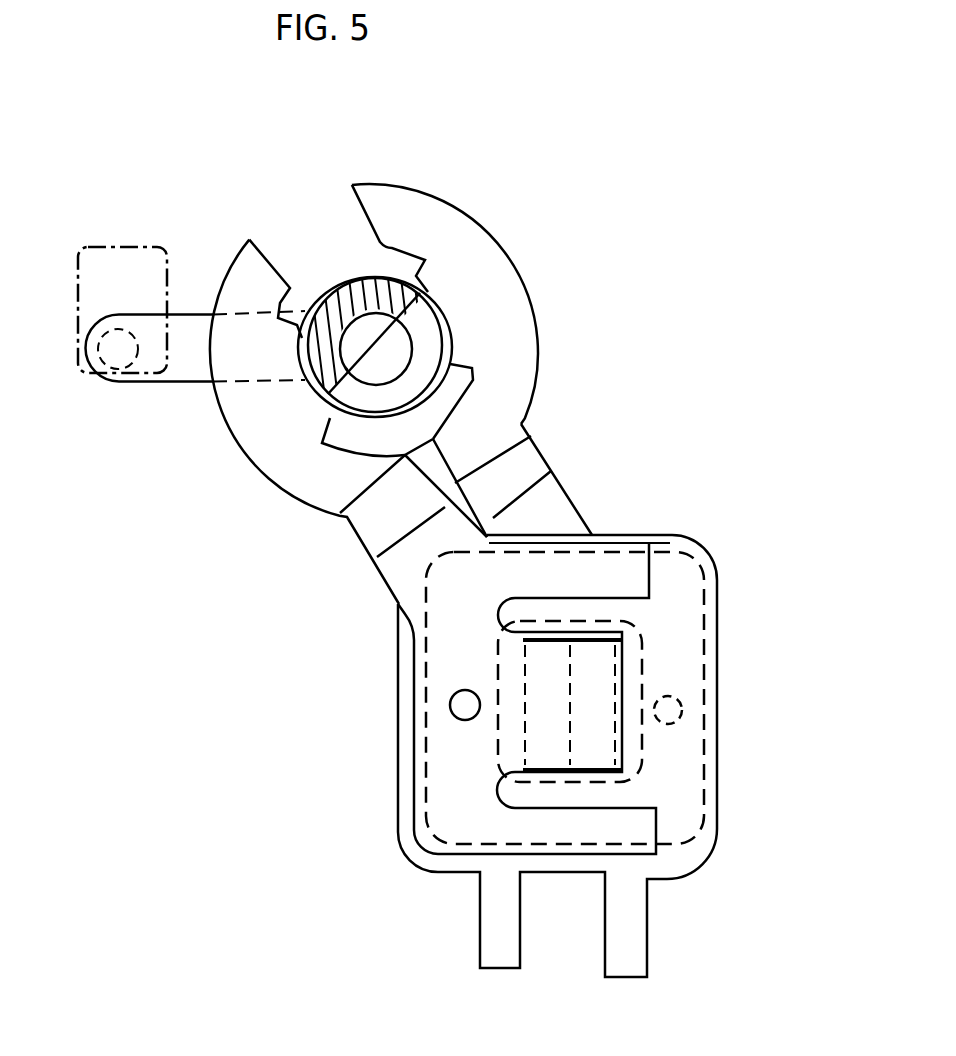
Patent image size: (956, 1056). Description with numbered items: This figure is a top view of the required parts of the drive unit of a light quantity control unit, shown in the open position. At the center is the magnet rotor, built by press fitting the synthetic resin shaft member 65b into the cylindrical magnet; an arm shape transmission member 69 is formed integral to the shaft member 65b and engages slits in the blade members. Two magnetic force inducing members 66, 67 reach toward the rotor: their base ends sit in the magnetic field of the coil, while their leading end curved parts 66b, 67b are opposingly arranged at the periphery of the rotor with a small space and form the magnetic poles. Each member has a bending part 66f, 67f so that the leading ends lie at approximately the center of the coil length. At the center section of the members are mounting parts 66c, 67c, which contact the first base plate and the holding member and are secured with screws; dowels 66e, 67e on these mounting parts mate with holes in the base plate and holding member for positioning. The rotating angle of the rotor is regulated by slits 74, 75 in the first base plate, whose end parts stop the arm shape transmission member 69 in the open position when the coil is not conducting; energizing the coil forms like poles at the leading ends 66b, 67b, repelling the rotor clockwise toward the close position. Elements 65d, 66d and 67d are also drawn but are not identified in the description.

The shaft member 65b is at (342, 300).
The shaft end / pin 65d is at (363, 303).
The magnetic force inducing member 66 is at (545, 314).
The leading end curved part 66b is at (447, 306).
The mounting part 66c is at (700, 858).
The window of first lever base (hidden) 66d is at (542, 730).
The dowel 66e is at (678, 707).
The bending part 66f is at (530, 473).
The magnetic force inducing member 67 is at (279, 515).
The leading end curved part 67b is at (303, 392).
The mounting part 67c is at (432, 852).
The engaging block 67d is at (597, 743).
The dowel 67e is at (450, 704).
The bending part 67f is at (375, 527).
The arm shape transmission member 69 is at (112, 365).
The slit 74 is at (102, 263).
The slit 75 is at (118, 251).